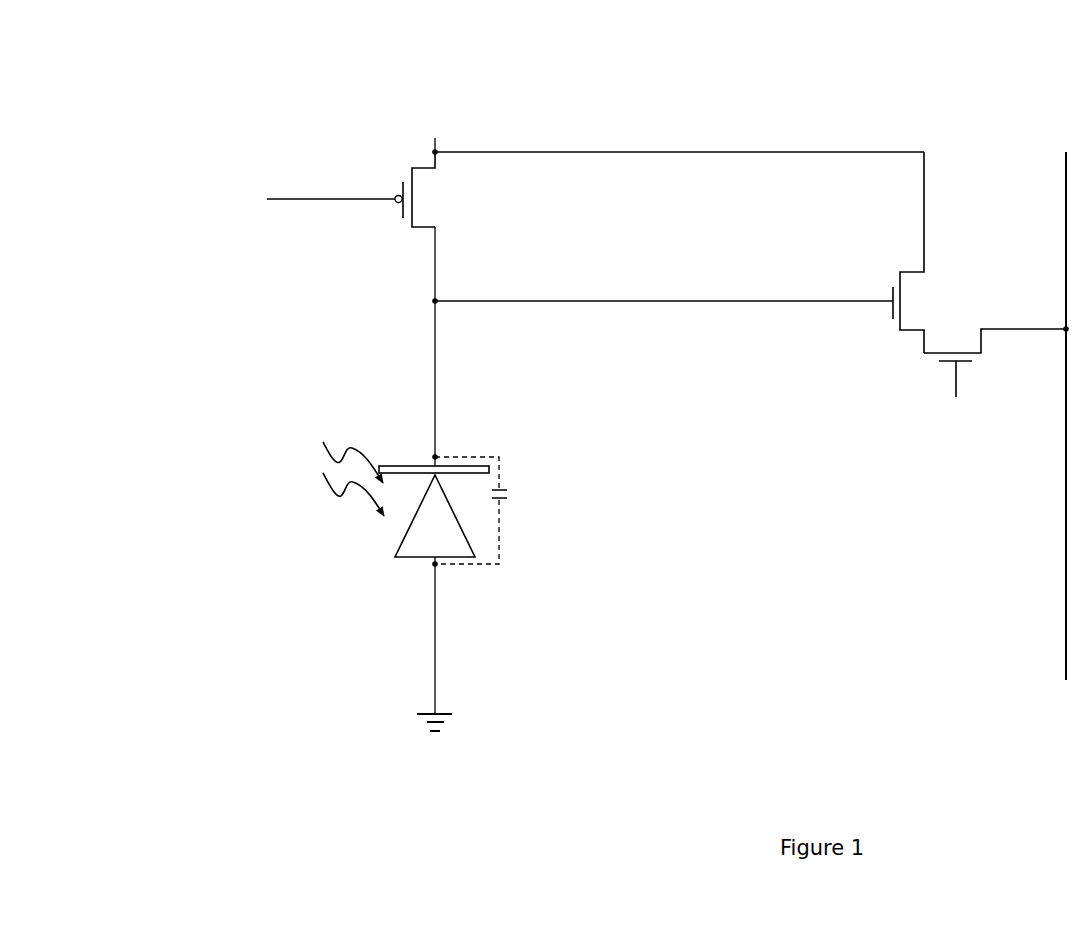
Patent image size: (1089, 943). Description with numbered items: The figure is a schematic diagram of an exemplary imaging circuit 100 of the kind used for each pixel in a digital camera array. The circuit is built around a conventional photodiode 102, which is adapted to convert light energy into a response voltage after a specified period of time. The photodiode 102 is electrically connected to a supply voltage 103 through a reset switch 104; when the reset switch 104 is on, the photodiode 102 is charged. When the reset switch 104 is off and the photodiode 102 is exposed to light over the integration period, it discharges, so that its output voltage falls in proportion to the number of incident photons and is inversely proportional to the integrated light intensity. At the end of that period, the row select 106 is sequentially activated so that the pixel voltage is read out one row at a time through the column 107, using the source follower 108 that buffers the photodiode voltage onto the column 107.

The imaging circuit 100 is at (263, 64).
The photodiode 102 is at (407, 557).
The supply voltage 103 is at (438, 108).
The reset switch 104 is at (340, 228).
The row select 106 is at (960, 433).
The column 107 is at (1055, 115).
The source follower 108 is at (827, 265).